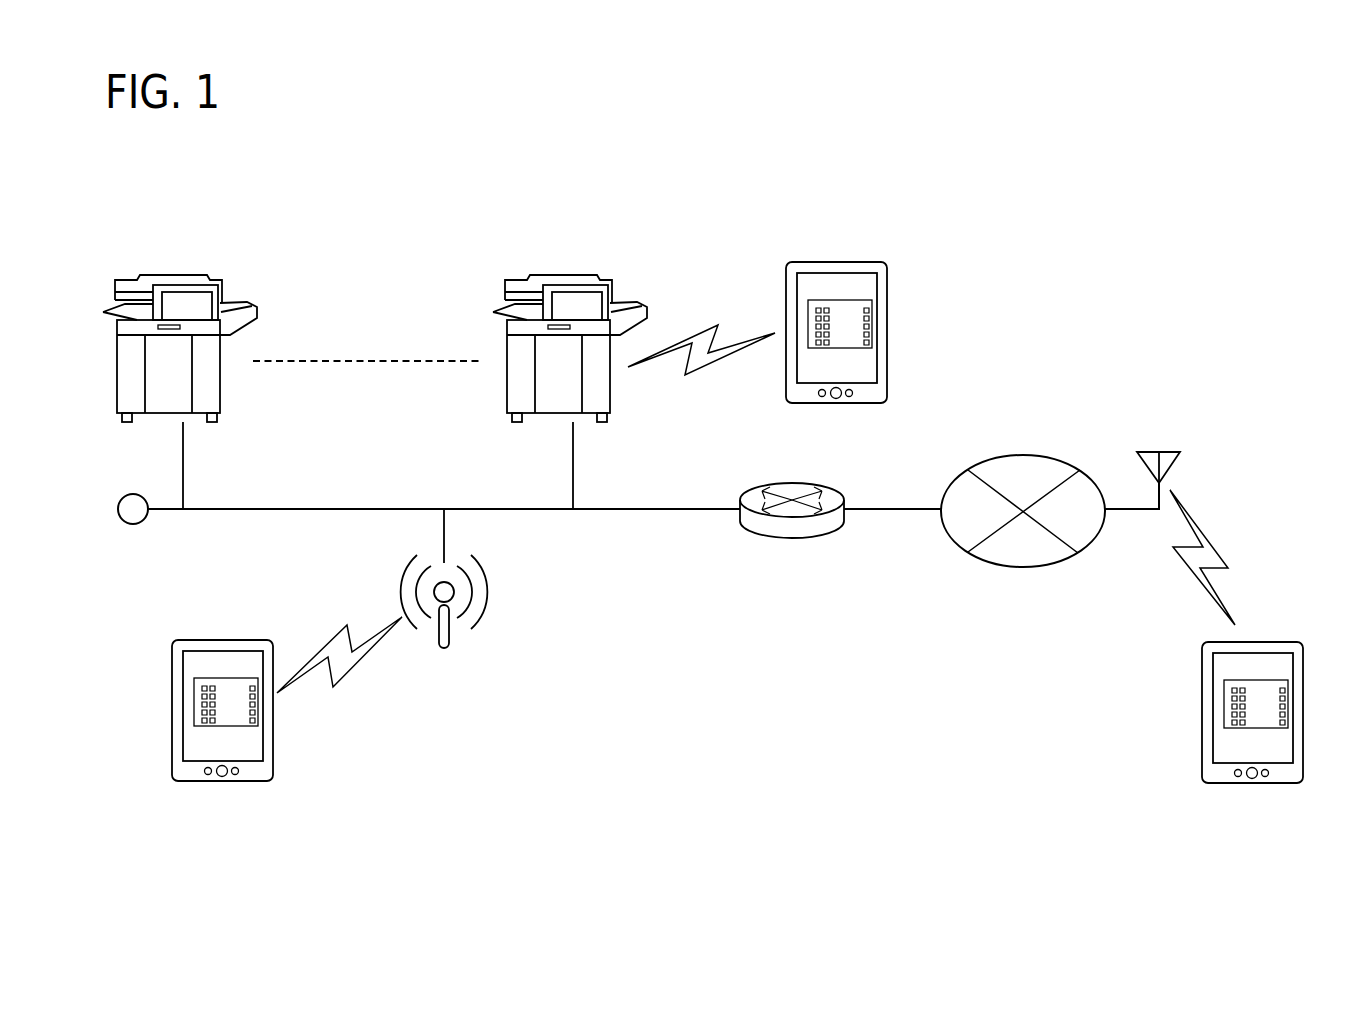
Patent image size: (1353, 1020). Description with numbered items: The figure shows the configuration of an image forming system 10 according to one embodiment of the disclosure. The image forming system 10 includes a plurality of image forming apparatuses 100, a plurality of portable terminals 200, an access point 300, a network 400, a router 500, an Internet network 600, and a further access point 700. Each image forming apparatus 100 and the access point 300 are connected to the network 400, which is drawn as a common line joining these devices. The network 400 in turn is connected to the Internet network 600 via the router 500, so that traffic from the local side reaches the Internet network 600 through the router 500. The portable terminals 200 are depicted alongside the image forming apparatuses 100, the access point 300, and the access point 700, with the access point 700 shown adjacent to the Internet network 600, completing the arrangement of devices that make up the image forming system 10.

The image forming system 10 is at (698, 791).
The image forming apparatus 100 is at (172, 277).
The portable terminal 200 is at (850, 262).
The access point 300 is at (478, 564).
The network 400 is at (677, 509).
The router 500 is at (798, 483).
The Internet network 600 is at (1025, 455).
The access point 700 is at (1165, 452).